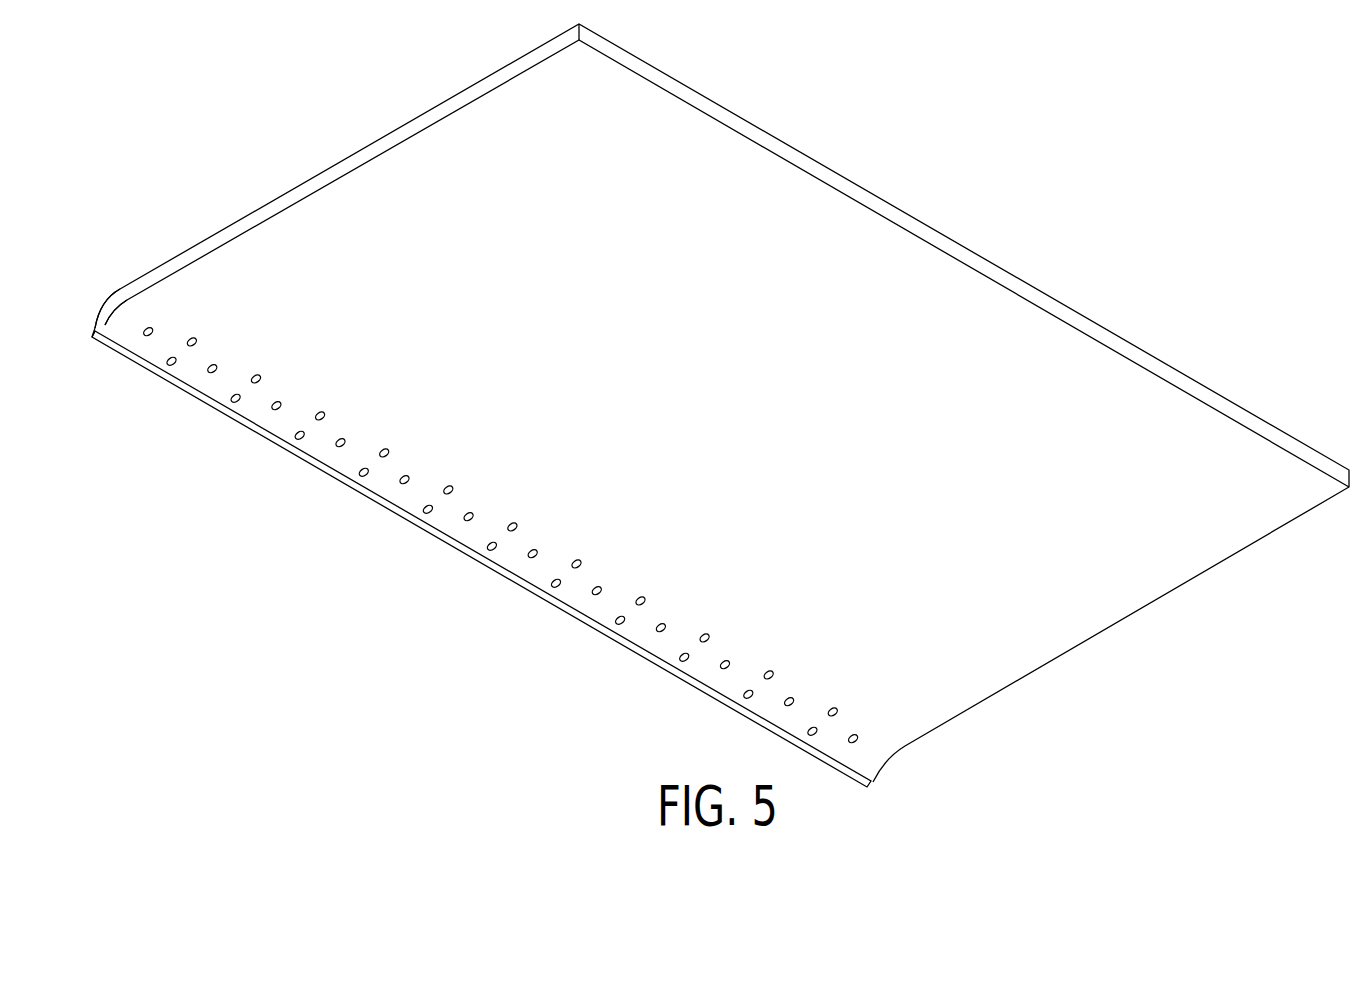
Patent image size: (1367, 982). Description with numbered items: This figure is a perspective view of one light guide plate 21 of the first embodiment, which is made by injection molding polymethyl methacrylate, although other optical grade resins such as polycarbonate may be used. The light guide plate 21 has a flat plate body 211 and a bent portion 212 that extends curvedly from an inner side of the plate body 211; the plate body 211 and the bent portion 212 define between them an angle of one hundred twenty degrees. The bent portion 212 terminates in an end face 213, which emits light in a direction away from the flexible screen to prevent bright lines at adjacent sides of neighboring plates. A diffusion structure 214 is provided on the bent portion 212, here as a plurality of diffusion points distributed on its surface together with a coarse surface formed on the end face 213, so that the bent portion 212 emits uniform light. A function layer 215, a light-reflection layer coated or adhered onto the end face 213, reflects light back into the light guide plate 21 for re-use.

The light guide plate 21 is at (908, 205).
The plate body 211 is at (258, 218).
The bent portion 212 is at (100, 320).
The end face 213 is at (90, 320).
The diffusion structure 214 is at (321, 405).
The function layer 215 is at (240, 419).